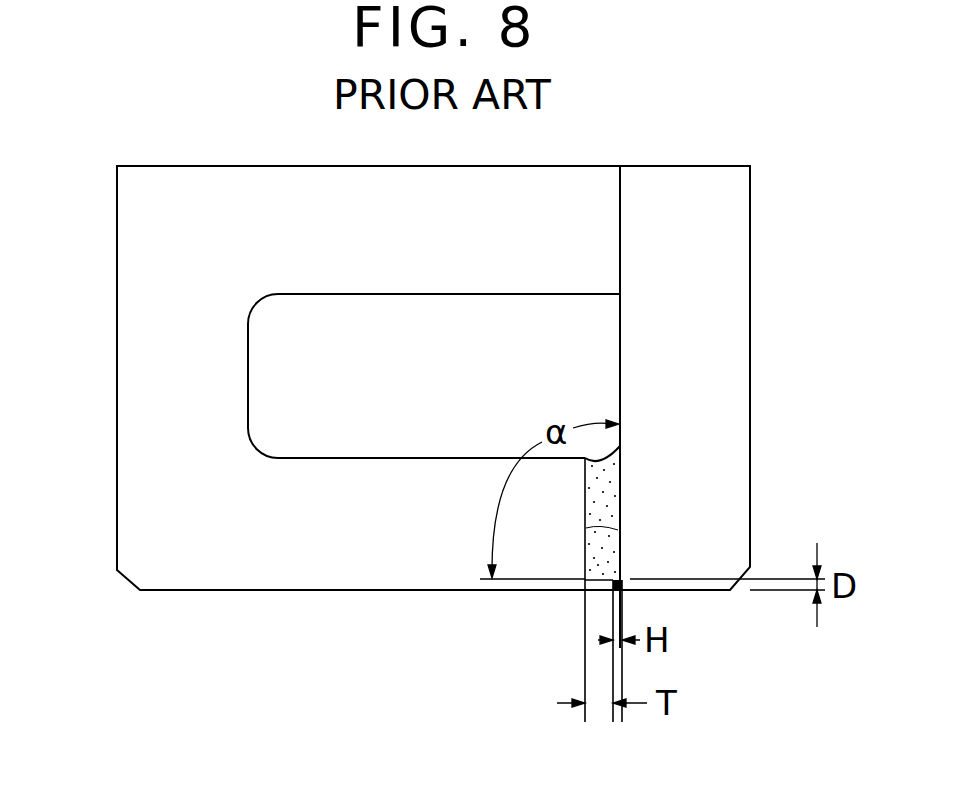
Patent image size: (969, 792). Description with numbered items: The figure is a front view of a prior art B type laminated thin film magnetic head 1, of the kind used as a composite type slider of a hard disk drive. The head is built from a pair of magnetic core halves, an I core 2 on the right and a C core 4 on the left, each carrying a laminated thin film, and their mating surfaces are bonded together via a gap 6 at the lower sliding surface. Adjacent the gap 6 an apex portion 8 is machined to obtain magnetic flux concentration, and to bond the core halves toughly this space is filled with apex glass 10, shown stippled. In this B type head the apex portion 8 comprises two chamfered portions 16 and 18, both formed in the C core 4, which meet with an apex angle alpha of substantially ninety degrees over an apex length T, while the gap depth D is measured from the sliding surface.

The magnetic head 1 is at (763, 220).
The I core 2 is at (719, 291).
The C core 4 is at (137, 287).
The gap 6 is at (630, 590).
The apex portion 8 is at (598, 453).
The apex glass 10 is at (613, 495).
The chamfered portion 16 is at (600, 577).
The chamfered portion 18 is at (588, 528).